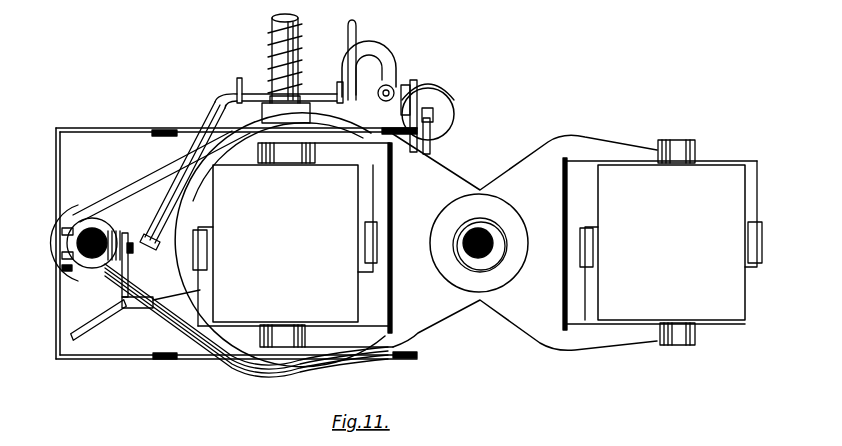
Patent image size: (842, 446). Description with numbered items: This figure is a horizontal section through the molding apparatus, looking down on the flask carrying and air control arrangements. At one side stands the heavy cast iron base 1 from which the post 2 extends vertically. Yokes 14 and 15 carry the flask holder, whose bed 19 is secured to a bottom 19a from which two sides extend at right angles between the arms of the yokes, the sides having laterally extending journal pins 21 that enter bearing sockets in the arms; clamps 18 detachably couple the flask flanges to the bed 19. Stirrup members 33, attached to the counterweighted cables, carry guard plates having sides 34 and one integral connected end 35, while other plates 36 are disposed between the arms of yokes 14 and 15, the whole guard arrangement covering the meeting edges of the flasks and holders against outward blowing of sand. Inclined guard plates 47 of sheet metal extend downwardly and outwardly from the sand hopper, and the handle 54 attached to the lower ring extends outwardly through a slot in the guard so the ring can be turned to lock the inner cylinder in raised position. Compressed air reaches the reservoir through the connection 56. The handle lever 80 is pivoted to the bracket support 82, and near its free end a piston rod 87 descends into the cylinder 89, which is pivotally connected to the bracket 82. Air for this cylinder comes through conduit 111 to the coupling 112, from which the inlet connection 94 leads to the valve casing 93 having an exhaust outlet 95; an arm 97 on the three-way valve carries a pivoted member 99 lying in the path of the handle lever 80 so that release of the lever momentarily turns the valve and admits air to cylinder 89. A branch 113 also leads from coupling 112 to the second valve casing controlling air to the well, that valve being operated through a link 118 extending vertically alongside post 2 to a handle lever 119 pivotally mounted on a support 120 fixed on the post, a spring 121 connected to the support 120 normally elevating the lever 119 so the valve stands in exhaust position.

The base 1 is at (263, 365).
The post 2 is at (92, 238).
The yoke 14 is at (625, 150).
The yoke 15 is at (340, 152).
The clamp 18 is at (202, 247).
The bed 19 is at (207, 293).
The bottom 19a is at (345, 200).
The journal pin 21 is at (285, 150).
The stirrup member 33 is at (162, 137).
The guard plate side 34 is at (120, 131).
The guard plate end 35 is at (62, 173).
The plate 36 is at (390, 238).
The inclined guard plate 47 is at (240, 330).
The handle 54 is at (83, 337).
The connection 56 is at (297, 30).
The handle lever 80 is at (417, 135).
The bracket support 82 is at (366, 113).
The piston rod 87 is at (430, 143).
The cylinder 89 is at (457, 100).
The valve casing 93 is at (393, 82).
The air inlet connection 94 is at (380, 48).
The exhaust outlet 95 is at (407, 90).
The arm 97 is at (447, 82).
The member 99 is at (433, 112).
The conduit 111 is at (357, 28).
The coupling 112 is at (343, 80).
The branch 113 is at (250, 92).
The link 118 is at (127, 270).
The handle lever 119 is at (120, 282).
The support 120 is at (80, 222).
The spring 121 is at (87, 262).